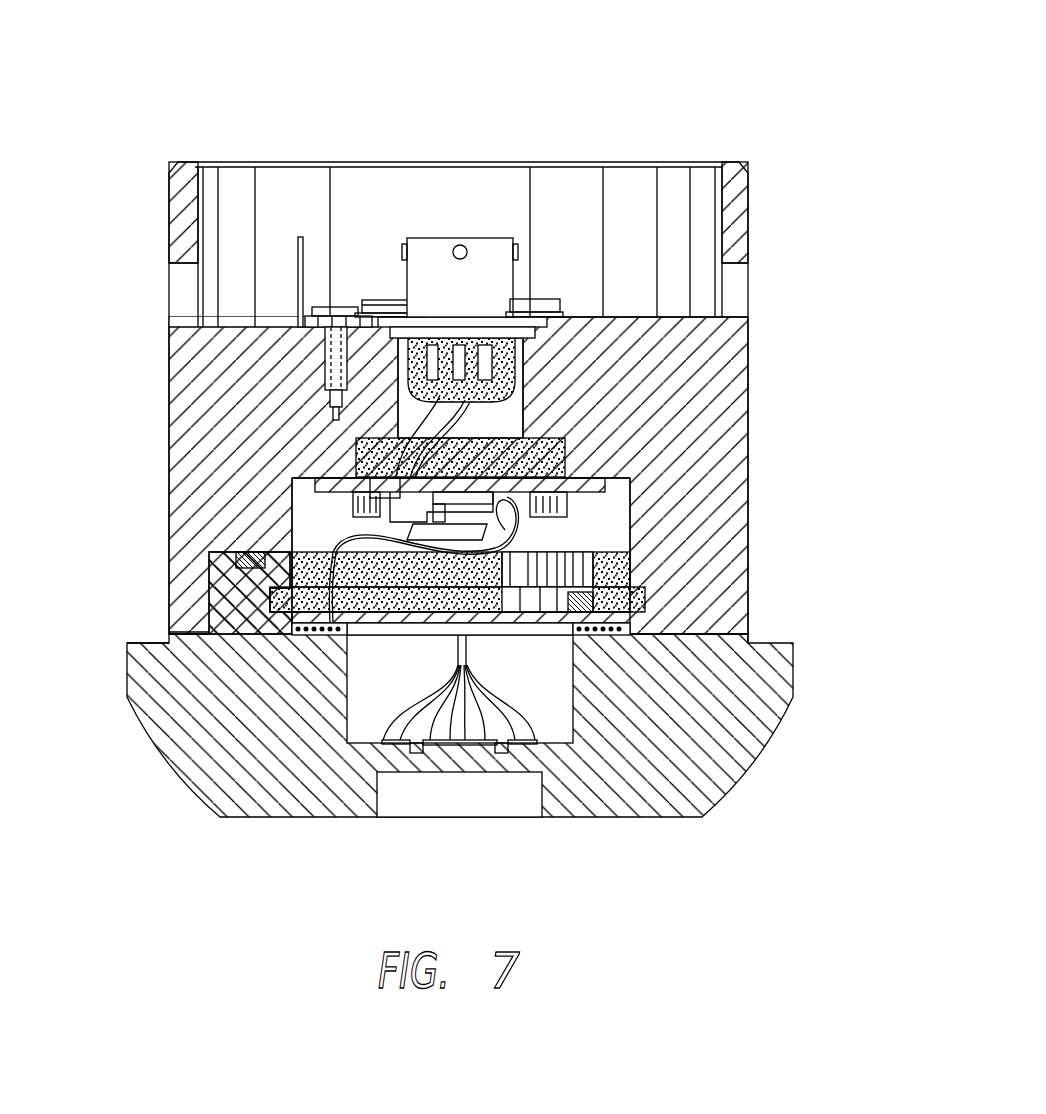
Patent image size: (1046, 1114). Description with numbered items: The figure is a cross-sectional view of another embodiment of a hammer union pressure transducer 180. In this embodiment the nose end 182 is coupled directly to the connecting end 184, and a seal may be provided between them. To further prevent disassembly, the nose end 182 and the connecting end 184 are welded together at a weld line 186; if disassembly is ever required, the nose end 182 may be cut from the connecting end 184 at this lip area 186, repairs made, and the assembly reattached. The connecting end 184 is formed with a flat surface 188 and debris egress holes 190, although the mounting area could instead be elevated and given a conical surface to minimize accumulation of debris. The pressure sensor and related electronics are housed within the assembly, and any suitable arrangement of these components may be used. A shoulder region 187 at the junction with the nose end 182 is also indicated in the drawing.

The sensor assembly 180 is at (597, 98).
The base 182 is at (727, 790).
The main body block 184 is at (748, 348).
The seal 186 is at (169, 632).
The base shoulder 187 is at (150, 641).
The circuit board assembly 188 is at (637, 315).
The cover 190 is at (748, 290).